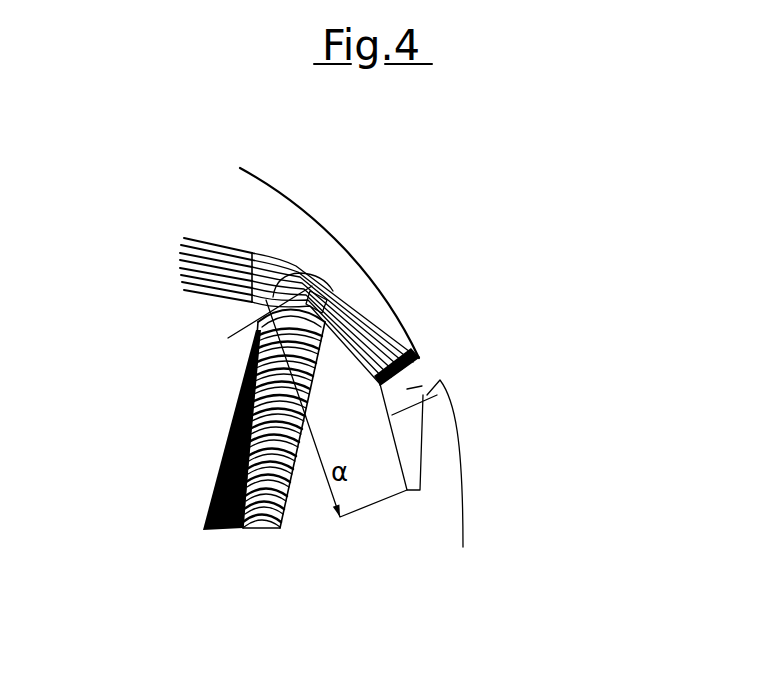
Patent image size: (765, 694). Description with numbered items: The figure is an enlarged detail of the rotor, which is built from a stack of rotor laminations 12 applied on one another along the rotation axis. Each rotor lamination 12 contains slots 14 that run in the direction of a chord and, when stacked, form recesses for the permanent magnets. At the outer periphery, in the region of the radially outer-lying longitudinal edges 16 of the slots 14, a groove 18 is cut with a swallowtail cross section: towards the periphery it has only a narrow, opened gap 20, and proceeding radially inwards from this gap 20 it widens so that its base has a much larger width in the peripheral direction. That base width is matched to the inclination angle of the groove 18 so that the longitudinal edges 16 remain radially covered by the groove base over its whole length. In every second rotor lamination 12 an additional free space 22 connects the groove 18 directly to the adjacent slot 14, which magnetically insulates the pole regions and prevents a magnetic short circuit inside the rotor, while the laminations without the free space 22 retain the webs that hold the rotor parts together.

The rotor lamination 12 is at (180, 270).
The slot 14 is at (230, 298).
The longitudinal edge 16 is at (277, 257).
The groove 18 is at (407, 389).
The gap 20 is at (440, 381).
The free space 22 is at (313, 295).